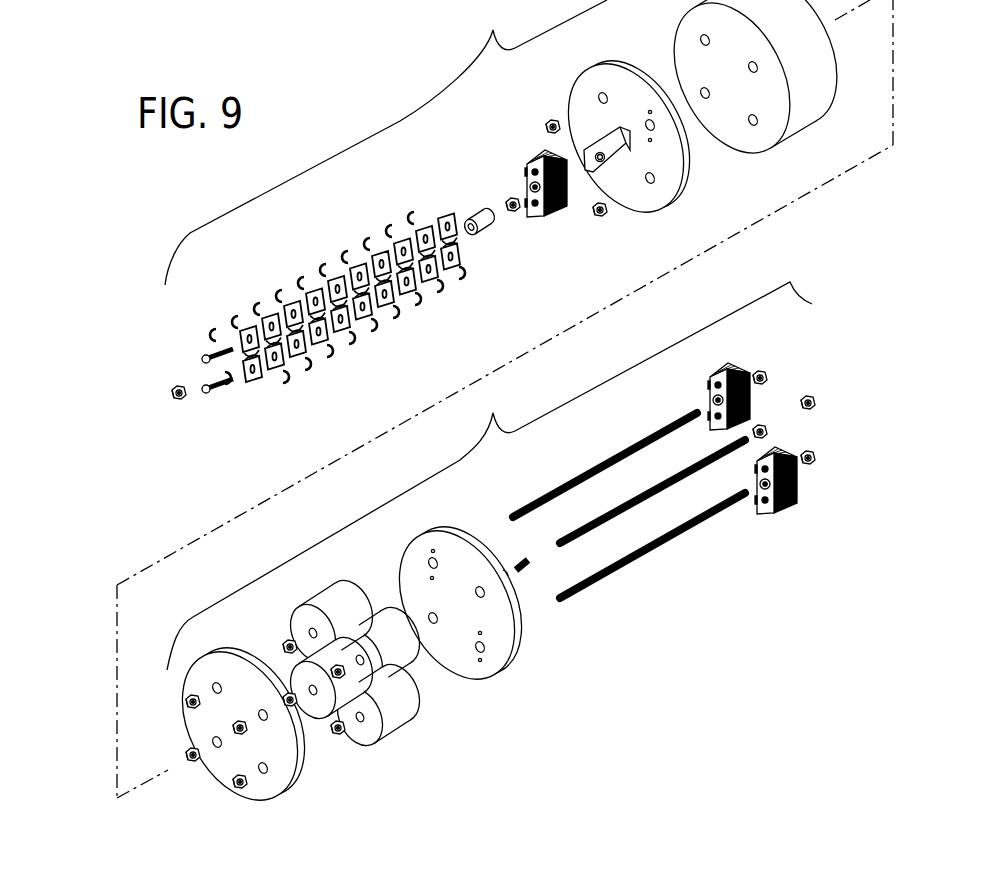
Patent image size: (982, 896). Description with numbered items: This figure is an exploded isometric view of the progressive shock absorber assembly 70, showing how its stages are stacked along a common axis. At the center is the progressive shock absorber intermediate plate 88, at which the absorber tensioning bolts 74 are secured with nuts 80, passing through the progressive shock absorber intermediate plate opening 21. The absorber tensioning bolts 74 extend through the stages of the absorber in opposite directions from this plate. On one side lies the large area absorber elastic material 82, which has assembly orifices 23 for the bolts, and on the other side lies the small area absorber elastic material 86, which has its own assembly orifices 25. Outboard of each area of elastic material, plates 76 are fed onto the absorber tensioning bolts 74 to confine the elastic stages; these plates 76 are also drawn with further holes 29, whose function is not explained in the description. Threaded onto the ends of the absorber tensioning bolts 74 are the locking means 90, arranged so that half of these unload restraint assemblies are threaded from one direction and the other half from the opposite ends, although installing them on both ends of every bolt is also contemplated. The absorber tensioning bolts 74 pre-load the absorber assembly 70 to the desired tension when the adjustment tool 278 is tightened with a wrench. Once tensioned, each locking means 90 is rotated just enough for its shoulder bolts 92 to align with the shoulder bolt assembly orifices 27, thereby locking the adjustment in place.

The progressive shock absorber assembly 70 is at (140, 214).
The absorber tensioning bolts 74 is at (690, 603).
The plates 76 is at (633, 198).
The nuts 80 is at (594, 216).
The large area absorber elastic material 82 is at (738, 133).
The small area absorber elastic material 86 is at (412, 652).
The progressive shock absorber intermediate plate 88 is at (302, 745).
The locking means 90 is at (513, 164).
The shoulder bolts 92 is at (204, 355).
The adjustment tool 278 is at (482, 232).
The progressive shock absorber intermediate plate opening 21 is at (213, 686).
The assembly orifices 23 is at (702, 92).
The assembly orifices 25 is at (407, 713).
The shoulder bolt assembly orifices 27 is at (650, 114).
The hole 29 is at (597, 98).